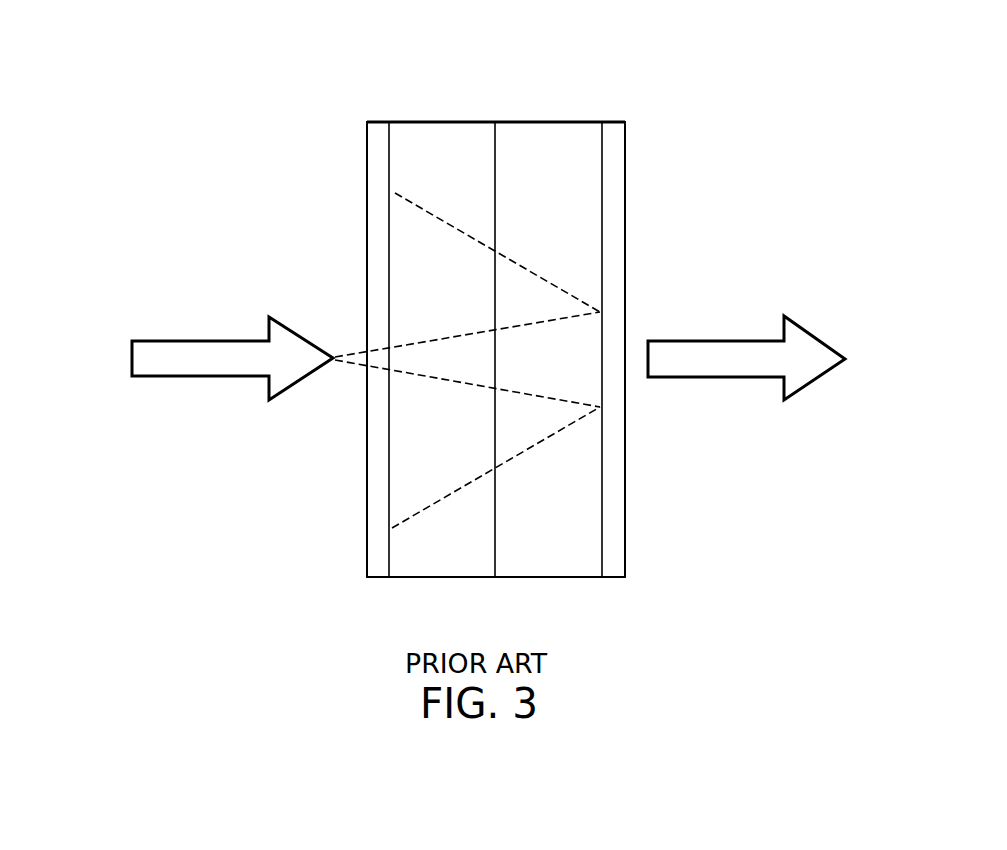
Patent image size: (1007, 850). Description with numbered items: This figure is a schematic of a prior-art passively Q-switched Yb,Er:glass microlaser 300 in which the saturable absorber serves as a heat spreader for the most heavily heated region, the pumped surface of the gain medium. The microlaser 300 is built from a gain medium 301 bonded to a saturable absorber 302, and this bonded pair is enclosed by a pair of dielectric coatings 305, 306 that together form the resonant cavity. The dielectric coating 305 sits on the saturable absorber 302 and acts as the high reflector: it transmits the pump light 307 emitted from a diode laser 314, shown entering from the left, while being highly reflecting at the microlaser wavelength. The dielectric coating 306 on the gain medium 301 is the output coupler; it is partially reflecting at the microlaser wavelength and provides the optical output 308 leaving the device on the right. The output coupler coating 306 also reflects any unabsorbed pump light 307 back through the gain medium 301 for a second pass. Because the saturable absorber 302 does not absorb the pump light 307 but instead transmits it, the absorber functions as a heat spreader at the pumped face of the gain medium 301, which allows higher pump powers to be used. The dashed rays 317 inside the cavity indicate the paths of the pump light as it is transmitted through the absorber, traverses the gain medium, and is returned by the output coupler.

The passively Q-switched Yb,Er:glass microlaser 300 is at (281, 62).
The gain medium 301 is at (552, 120).
The saturable absorber 302 is at (438, 119).
The dielectric coating 305 is at (367, 149).
The dielectric coating 306 is at (625, 145).
The pump light 307 is at (343, 362).
The optical output 308 is at (721, 338).
The diode laser 314 is at (203, 340).
The light rays 317 is at (522, 456).